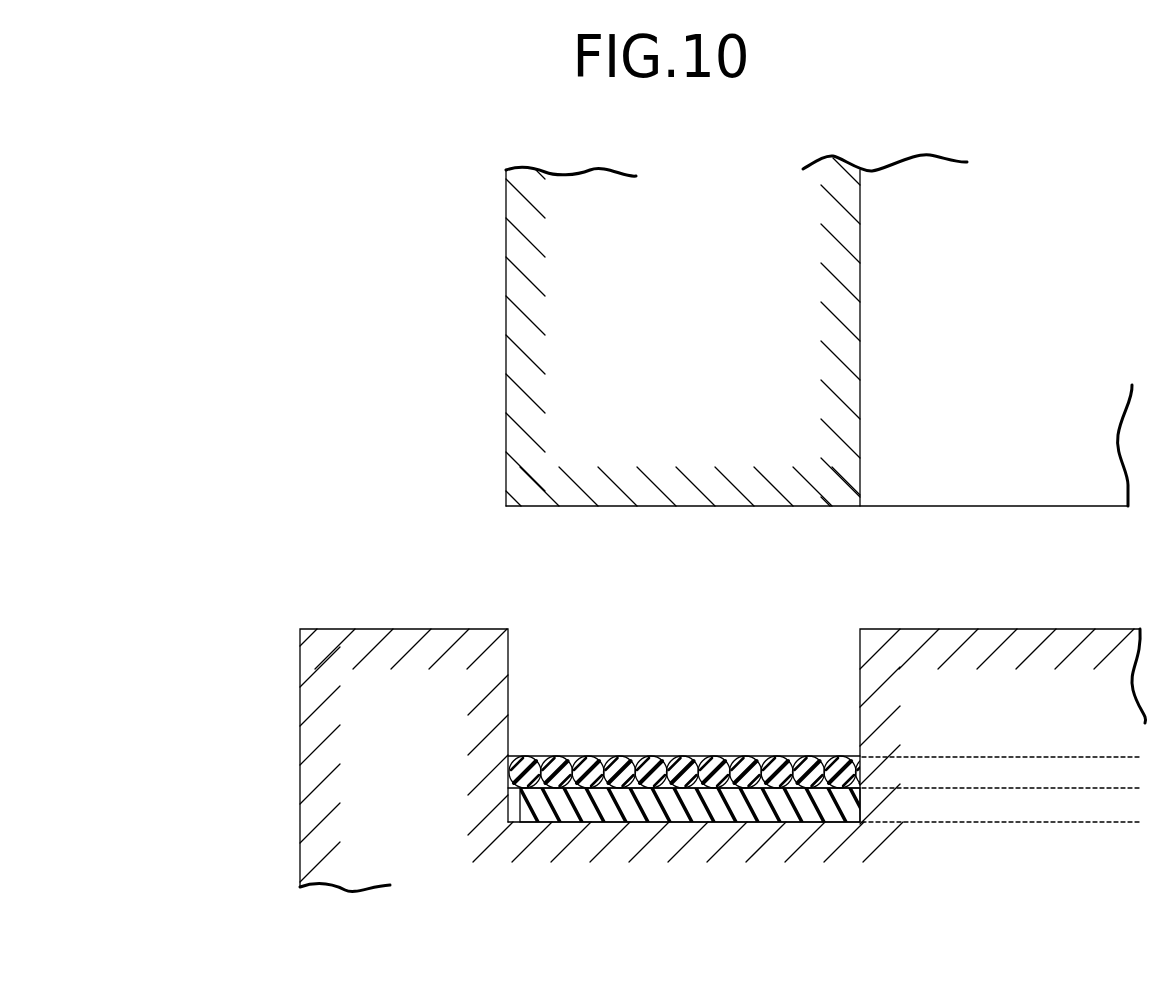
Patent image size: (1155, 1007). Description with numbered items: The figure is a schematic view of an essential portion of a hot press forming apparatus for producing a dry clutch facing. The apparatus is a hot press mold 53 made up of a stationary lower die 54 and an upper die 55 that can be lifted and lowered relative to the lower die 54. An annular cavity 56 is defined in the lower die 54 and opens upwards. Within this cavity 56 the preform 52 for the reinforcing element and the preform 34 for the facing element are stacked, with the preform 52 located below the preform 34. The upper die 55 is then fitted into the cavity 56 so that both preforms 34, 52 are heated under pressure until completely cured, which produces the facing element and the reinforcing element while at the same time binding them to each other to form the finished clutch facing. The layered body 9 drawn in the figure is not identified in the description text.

The hot press mold 53 is at (718, 330).
The upper die 55 is at (518, 232).
The lower die 54 is at (320, 762).
The annular cavity 56 is at (858, 670).
The preform for the facing element 34 is at (575, 758).
The laminated body 9 is at (698, 796).
The preform for the reinforcing element 52 is at (686, 805).